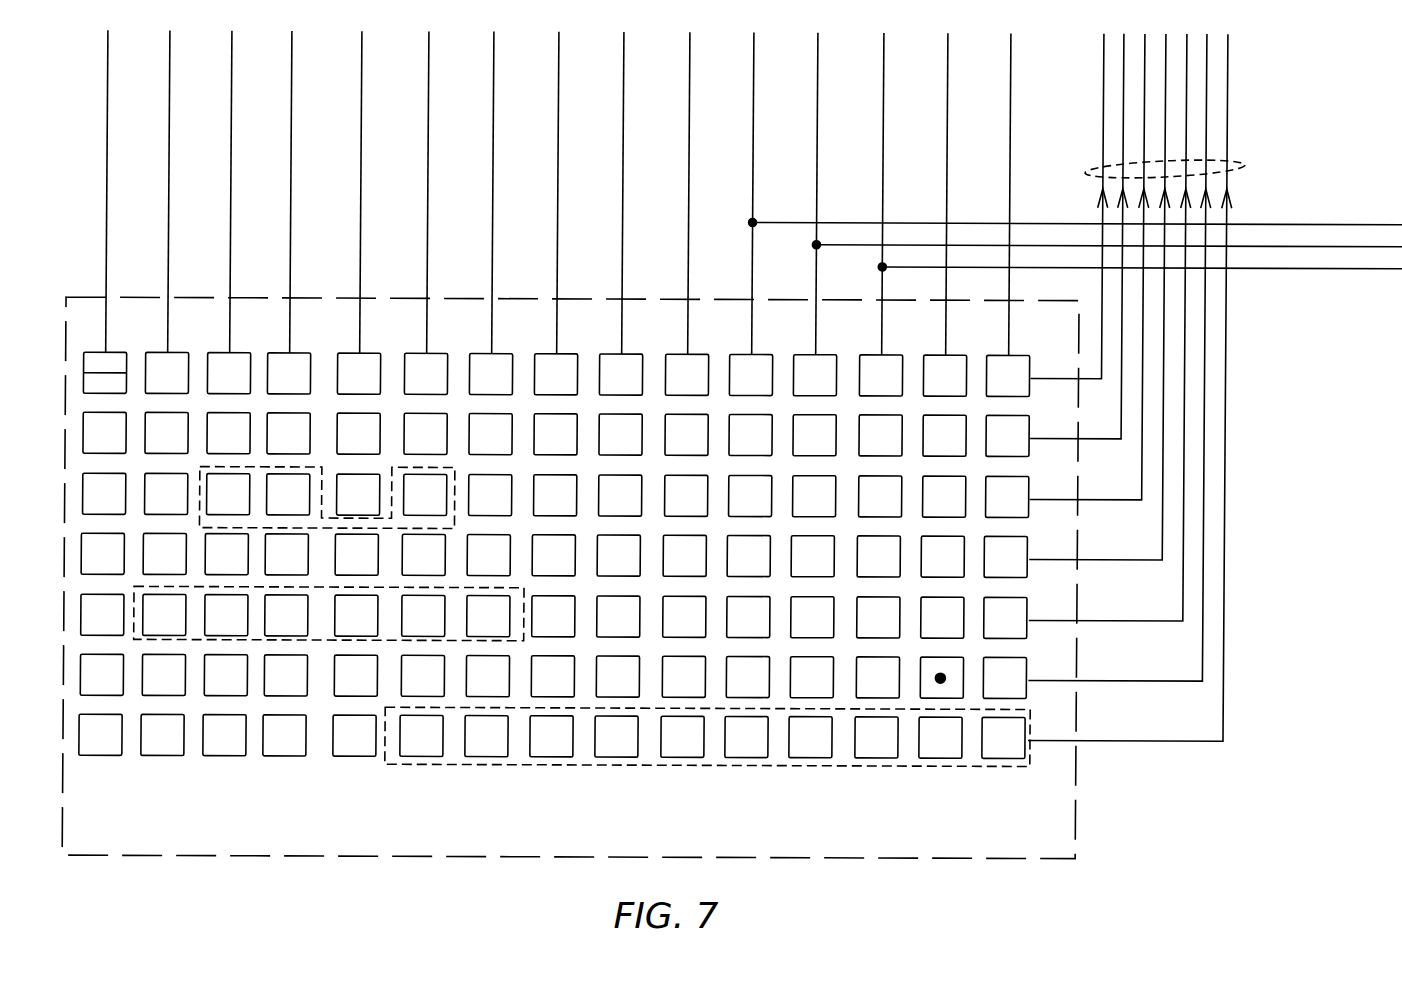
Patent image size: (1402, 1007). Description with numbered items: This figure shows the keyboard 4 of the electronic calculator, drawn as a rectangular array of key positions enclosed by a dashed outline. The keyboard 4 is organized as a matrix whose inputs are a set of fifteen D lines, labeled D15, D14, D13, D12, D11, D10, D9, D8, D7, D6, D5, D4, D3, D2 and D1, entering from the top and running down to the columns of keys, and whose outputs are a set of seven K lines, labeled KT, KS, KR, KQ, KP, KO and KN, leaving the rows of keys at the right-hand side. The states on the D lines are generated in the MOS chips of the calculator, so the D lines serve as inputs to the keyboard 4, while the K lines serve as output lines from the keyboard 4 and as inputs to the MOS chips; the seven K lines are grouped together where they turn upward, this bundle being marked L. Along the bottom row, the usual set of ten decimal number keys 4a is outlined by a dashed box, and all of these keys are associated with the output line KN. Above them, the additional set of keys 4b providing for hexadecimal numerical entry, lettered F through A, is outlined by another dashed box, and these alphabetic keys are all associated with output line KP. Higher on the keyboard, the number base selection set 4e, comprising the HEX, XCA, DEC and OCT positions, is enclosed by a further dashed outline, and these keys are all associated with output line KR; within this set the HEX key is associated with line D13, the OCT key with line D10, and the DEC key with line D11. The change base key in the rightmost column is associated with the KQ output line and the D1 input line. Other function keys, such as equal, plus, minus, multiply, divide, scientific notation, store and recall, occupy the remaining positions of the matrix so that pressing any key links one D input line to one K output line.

The keyboard 4 is at (445, 857).
The decimal number keys 4a is at (712, 765).
The hexadecimal entry keys 4b is at (333, 641).
The number base selection key set 4e is at (200, 521).
The keyboard output lines L is at (1083, 168).
The D input line D1 is at (1008, 318).
The D input line D2 is at (945, 318).
The D input line D3 is at (881, 318).
The D input line D4 is at (815, 318).
The D input line D5 is at (751, 318).
The D input line D6 is at (687, 318).
The D input line D7 is at (621, 318).
The D input line D8 is at (556, 318).
The D input line D9 is at (491, 318).
The D input line D10 is at (426, 318).
The D input line D11 is at (359, 318).
The D input line D12 is at (289, 318).
The D input line D13 is at (229, 318).
The D input line D14 is at (167, 318).
The D input line D15 is at (105, 318).
The K output line KT is at (1065, 377).
The K output line KS is at (1065, 437).
The K output line KR is at (1065, 498).
The K output line KQ is at (1065, 558).
The K output line KP is at (1065, 619).
The K output line KO is at (1065, 679).
The K output line KN is at (1065, 739).